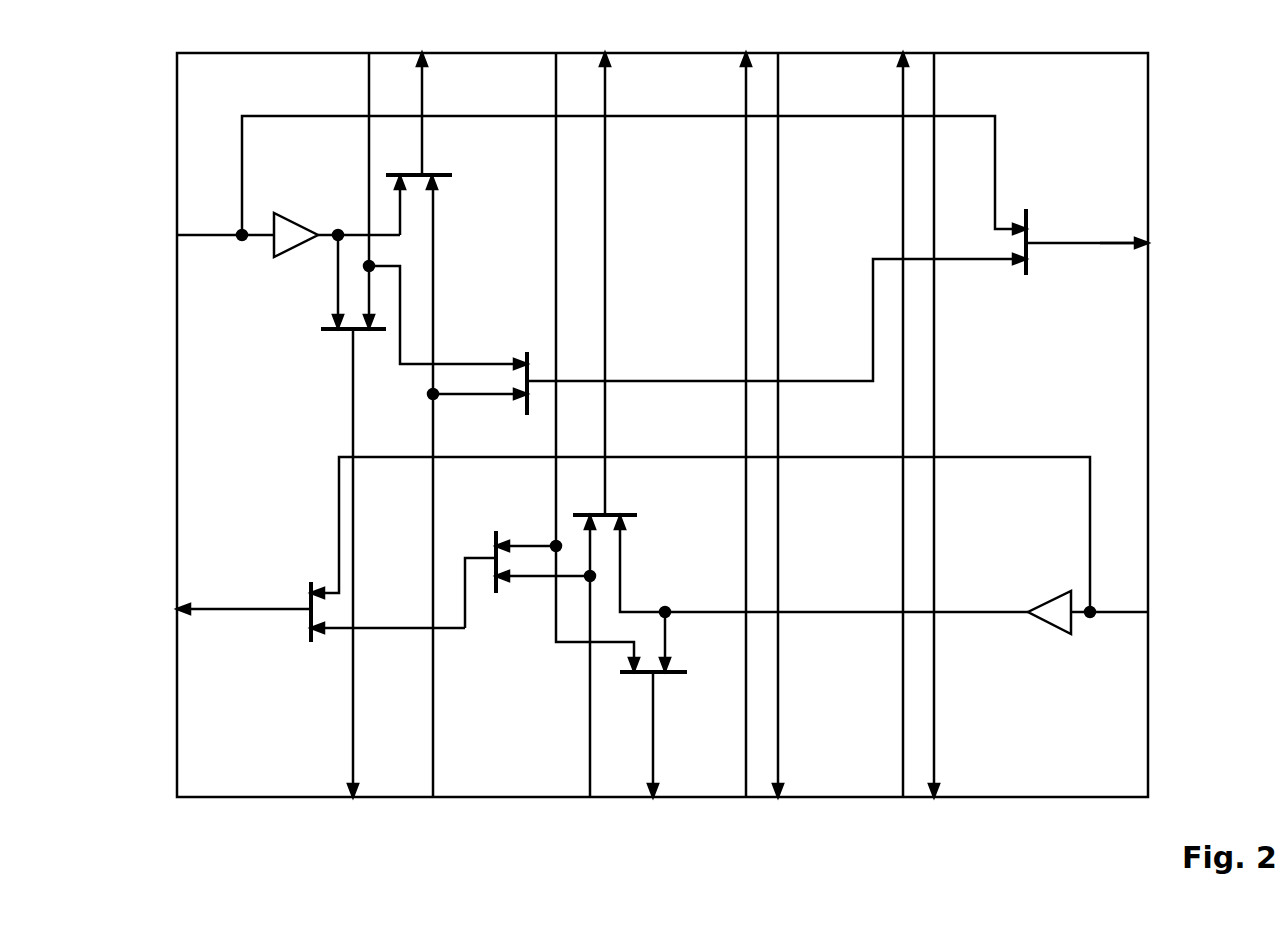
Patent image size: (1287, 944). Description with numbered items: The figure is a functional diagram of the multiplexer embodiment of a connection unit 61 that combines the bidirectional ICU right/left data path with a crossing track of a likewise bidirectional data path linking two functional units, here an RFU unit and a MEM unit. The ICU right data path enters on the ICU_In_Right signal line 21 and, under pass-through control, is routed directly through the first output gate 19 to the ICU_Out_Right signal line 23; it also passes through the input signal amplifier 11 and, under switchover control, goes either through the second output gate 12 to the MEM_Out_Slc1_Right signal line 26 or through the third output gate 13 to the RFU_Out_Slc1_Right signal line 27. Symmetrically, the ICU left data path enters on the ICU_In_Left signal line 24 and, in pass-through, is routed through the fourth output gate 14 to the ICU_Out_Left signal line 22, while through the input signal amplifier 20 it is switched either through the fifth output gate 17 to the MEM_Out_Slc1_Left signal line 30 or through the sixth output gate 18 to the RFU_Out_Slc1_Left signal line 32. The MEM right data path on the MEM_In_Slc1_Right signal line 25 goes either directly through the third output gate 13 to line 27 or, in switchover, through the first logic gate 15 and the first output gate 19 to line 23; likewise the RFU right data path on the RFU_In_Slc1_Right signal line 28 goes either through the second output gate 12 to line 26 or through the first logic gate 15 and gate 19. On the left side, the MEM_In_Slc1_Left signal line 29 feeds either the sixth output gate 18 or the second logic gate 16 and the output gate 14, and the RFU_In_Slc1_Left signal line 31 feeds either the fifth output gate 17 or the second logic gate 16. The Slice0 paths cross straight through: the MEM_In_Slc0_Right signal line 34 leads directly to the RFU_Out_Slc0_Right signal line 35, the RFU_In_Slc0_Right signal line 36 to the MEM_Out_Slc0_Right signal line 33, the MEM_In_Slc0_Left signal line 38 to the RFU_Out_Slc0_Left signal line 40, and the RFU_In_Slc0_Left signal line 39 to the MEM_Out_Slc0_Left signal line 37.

The input signal amplifier 11 is at (337, 245).
The second output gate 12 is at (428, 187).
The third output gate 13 is at (358, 298).
The fourth output gate 14 is at (385, 600).
The first logic gate 15 is at (695, 334).
The second logic gate 16 is at (526, 557).
The fifth output gate 17 is at (611, 510).
The sixth output gate 18 is at (627, 627).
The first output gate 19 is at (1075, 246).
The input signal amplifier 20 is at (700, 564).
The ICU_In_Right signal line 21 is at (577, 184).
The ICU_Out_Left signal line 22 is at (220, 609).
The ICU_Out_Right signal line 23 is at (1149, 242).
The ICU_In_Left signal line 24 is at (1134, 611).
The MEM_In_Slc1_Right signal line 25 is at (370, 167).
The MEM_Out_Slc1_Right signal line 26 is at (423, 96).
The RFU_Out_Slc1_Right signal line 27 is at (350, 587).
The RFU_In_Slc1_Right signal line 28 is at (430, 516).
The MEM_In_Slc1_Left signal line 29 is at (557, 282).
The MEM_Out_Slc1_Left signal line 30 is at (607, 266).
The RFU_In_Slc1_Left signal line 31 is at (585, 686).
The RFU_Out_Slc1_Left signal line 32 is at (650, 758).
The MEM_Out_Slc0_Right signal line 33 is at (743, 221).
The MEM_In_Slc0_Right signal line 34 is at (782, 221).
The RFU_Out_Slc0_Right signal line 35 is at (780, 635).
The RFU_In_Slc0_Right signal line 36 is at (742, 635).
The MEM_Out_Slc0_Left signal line 37 is at (903, 221).
The MEM_In_Slc0_Left signal line 38 is at (940, 221).
The RFU_In_Slc0_Left signal line 39 is at (900, 635).
The RFU_Out_Slc0_Left signal line 40 is at (940, 635).
The connection unit 61 is at (662, 425).